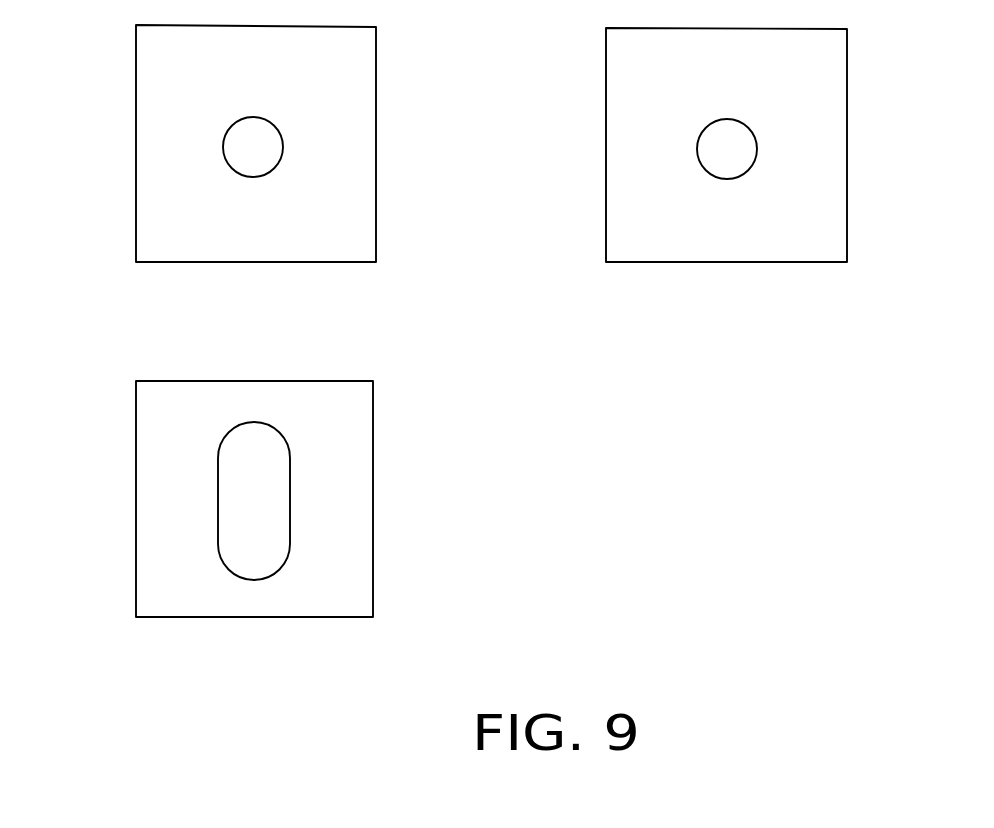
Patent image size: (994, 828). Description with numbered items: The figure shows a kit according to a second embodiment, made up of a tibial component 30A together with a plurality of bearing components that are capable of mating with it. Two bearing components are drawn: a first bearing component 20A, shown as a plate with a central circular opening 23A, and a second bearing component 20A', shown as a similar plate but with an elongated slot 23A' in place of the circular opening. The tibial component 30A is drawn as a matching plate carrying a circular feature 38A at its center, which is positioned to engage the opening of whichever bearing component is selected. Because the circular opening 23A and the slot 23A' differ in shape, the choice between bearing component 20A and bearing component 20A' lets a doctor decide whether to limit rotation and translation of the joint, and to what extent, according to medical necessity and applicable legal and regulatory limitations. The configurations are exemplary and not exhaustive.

The bearing component 20A is at (199, 142).
The circular hole 23A is at (343, 163).
The tibial component 30A is at (857, 29).
The circular hole in second plate 38A is at (727, 149).
The bearing component 20A' is at (200, 499).
The slotted hole 23A' is at (339, 501).